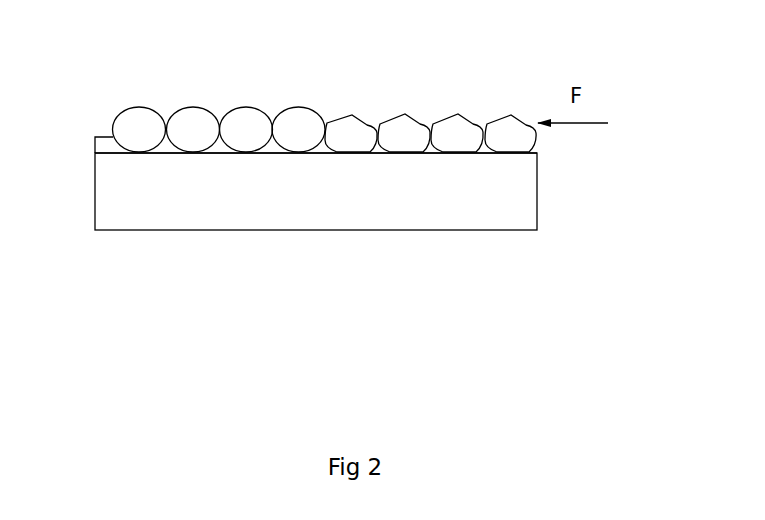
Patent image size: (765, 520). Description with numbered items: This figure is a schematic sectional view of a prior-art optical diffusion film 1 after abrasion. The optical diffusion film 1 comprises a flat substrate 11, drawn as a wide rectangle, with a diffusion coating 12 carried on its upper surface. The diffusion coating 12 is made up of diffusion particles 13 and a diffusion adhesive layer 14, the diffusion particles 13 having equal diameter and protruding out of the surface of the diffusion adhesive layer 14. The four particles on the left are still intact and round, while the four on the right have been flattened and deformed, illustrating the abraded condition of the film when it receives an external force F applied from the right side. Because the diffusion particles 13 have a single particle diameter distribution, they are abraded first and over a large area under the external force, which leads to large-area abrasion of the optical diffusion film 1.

The optical diffusion film 1 is at (152, 258).
The substrate 11 is at (518, 198).
The diffusion coating 12 is at (103, 136).
The diffusion particles 13 is at (515, 137).
The diffusion adhesive layer 14 is at (502, 152).